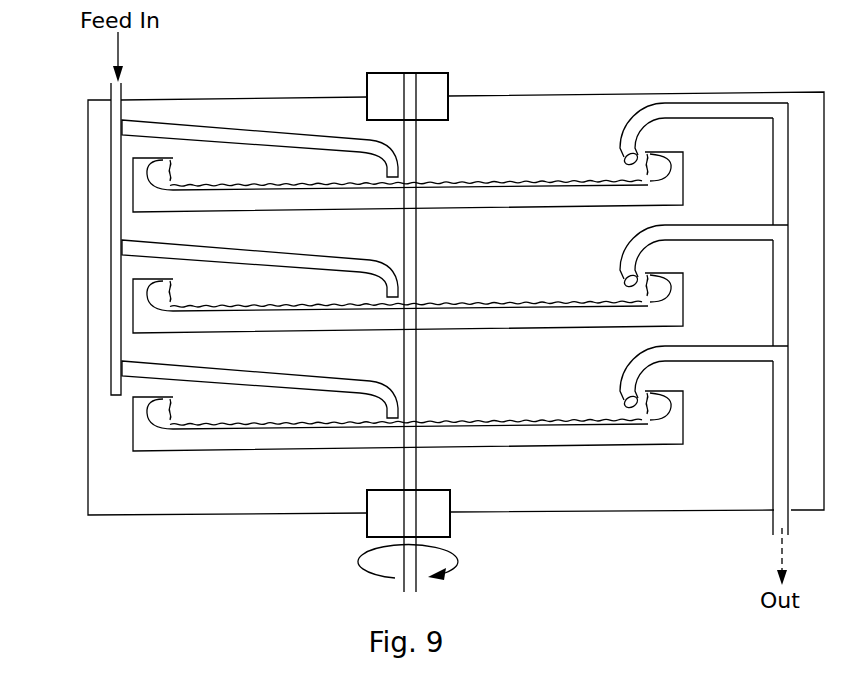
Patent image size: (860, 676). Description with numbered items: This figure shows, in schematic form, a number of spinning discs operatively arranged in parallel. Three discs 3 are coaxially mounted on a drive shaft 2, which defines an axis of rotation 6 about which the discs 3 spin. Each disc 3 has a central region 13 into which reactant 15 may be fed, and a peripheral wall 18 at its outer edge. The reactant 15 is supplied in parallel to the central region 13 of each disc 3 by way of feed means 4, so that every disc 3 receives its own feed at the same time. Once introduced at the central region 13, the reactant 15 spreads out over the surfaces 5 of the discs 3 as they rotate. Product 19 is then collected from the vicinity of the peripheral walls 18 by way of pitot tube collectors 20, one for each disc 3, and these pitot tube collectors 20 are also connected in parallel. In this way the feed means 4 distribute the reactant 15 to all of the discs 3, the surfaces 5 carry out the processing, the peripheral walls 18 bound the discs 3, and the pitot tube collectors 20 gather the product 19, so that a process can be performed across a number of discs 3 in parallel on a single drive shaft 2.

The drive shaft 2 is at (408, 134).
The disc 3 is at (520, 192).
The feed means 4 is at (118, 228).
The surface 5 is at (543, 180).
The axis of rotation 6 is at (416, 584).
The central region 13 is at (420, 190).
The reactant 15 is at (298, 183).
The peripheral wall 18 is at (671, 165).
The product 19 is at (172, 170).
The pitot tube collector 20 is at (676, 106).